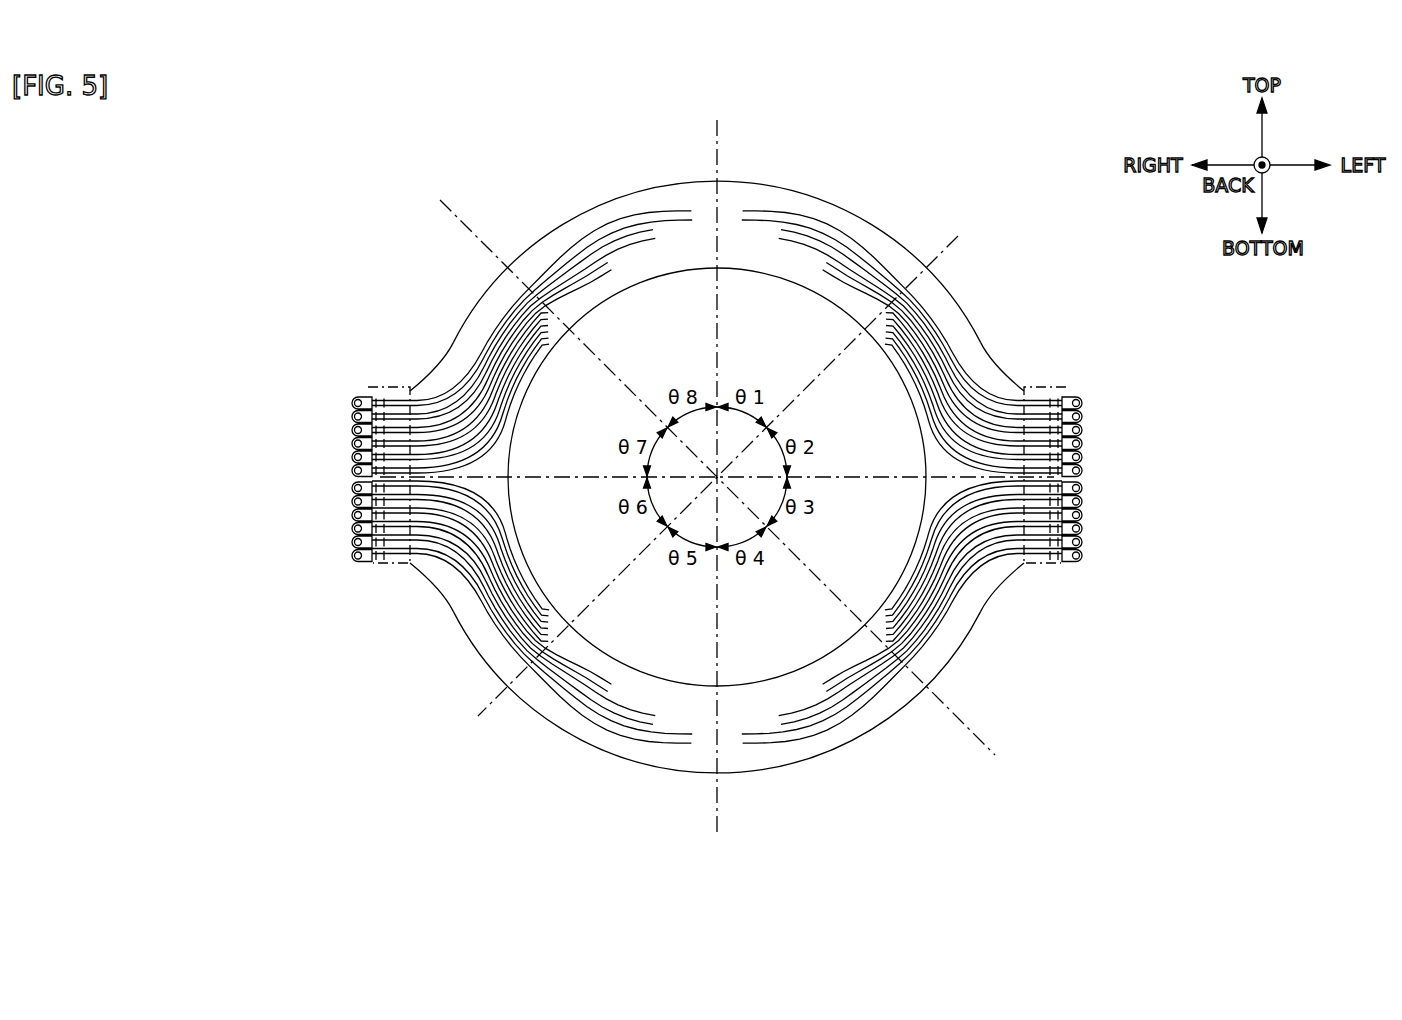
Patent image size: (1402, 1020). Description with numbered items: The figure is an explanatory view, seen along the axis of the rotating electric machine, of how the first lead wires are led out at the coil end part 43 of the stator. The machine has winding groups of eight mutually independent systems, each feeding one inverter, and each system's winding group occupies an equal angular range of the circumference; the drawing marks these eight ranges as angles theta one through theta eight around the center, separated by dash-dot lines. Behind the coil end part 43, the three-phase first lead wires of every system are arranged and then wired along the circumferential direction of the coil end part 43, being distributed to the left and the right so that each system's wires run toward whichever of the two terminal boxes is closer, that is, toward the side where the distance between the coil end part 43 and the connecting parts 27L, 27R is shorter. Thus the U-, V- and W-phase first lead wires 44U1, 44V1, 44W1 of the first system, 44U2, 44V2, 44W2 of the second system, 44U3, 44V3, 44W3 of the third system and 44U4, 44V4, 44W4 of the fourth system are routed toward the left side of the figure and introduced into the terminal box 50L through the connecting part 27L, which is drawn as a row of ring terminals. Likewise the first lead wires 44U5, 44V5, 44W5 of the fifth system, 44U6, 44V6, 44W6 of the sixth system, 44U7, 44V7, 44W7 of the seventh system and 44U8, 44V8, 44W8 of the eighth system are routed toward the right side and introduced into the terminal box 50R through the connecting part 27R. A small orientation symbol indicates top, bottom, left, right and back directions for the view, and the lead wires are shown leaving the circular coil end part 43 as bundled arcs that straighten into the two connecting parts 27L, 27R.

The coil end part 43 is at (734, 184).
The connecting part 27R is at (368, 387).
The connecting part 27L is at (1066, 387).
The terminal box 50R is at (264, 476).
The terminal box 50L is at (1169, 476).
The first lead wire 44U1 is at (790, 225).
The first lead wire 44V1 is at (815, 265).
The first lead wire 44W1 is at (858, 280).
The first lead wire 44U2 is at (907, 322).
The first lead wire 44V2 is at (922, 375).
The first lead wire 44W2 is at (951, 432).
The first lead wire 44U3 is at (957, 515).
The first lead wire 44V3 is at (924, 572).
The first lead wire 44W3 is at (907, 620).
The first lead wire 44U4 is at (847, 680).
The first lead wire 44V4 is at (811, 712).
The first lead wire 44W4 is at (781, 733).
The first lead wire 44U5 is at (653, 733).
The first lead wire 44V5 is at (623, 712).
The first lead wire 44W5 is at (587, 680).
The first lead wire 44U6 is at (527, 620).
The first lead wire 44V6 is at (510, 572).
The first lead wire 44W6 is at (477, 515).
The first lead wire 44U7 is at (483, 432).
The first lead wire 44V7 is at (512, 375).
The first lead wire 44W7 is at (527, 322).
The first lead wire 44U8 is at (566, 285).
The first lead wire 44V8 is at (600, 250).
The first lead wire 44W8 is at (636, 226).